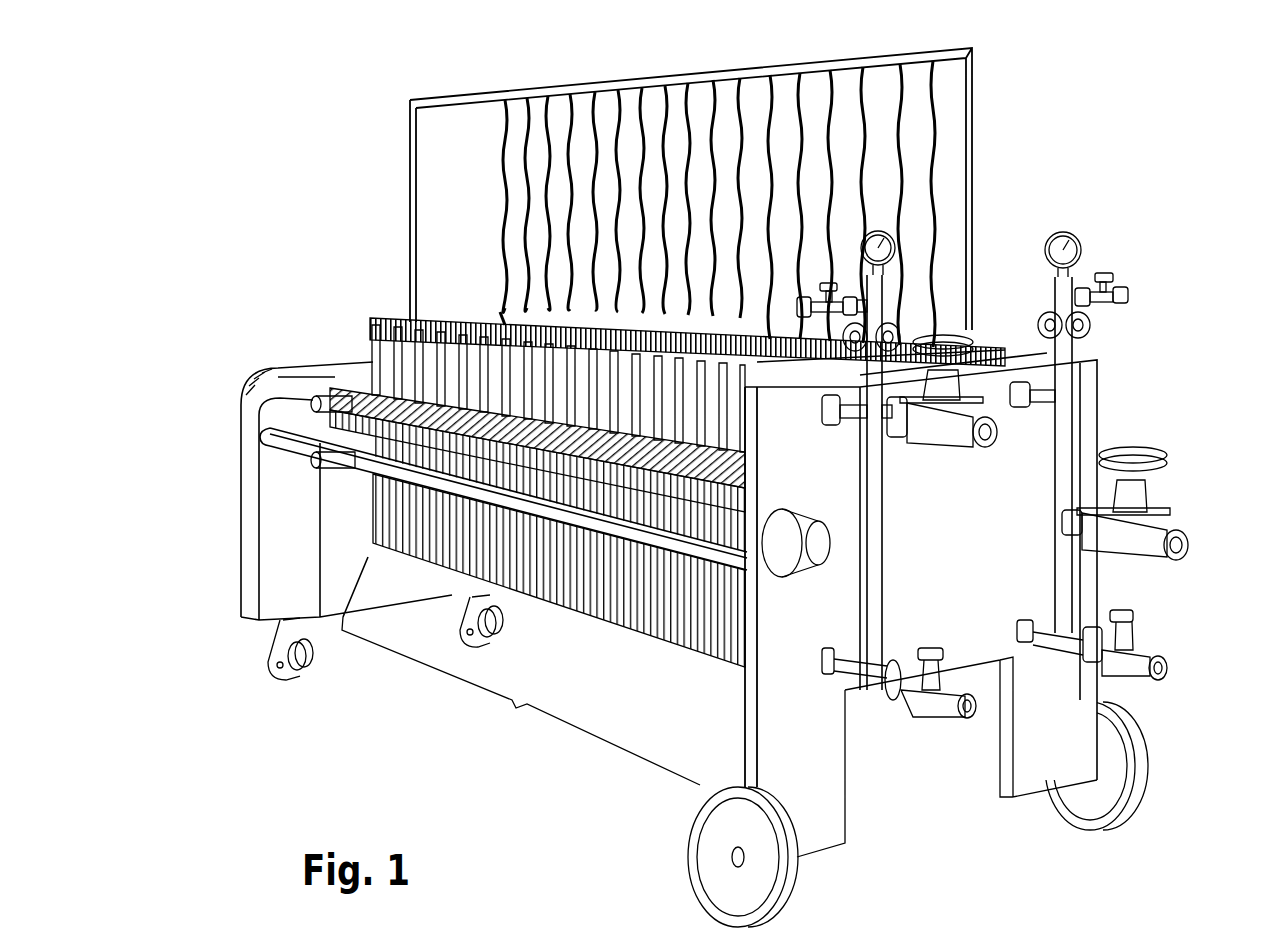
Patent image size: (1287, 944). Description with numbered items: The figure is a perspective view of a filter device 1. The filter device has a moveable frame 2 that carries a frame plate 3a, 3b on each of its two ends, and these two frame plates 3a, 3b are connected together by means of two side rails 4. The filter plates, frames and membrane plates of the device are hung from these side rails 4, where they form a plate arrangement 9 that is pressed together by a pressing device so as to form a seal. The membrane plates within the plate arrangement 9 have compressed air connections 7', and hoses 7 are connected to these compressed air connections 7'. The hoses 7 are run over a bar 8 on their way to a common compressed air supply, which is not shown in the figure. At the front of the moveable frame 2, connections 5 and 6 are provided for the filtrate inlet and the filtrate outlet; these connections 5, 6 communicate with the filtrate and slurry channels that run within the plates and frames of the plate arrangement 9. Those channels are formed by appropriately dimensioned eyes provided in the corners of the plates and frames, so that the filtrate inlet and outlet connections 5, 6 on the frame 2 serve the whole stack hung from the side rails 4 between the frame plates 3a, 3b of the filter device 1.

The filter device 1 is at (1044, 166).
The moveable frame 2 is at (241, 462).
The frame plate 3a is at (823, 775).
The frame plate 3b is at (276, 550).
The side rails 4 is at (300, 402).
The connection for the filtrate inlet 5 is at (960, 712).
The connection for the filtrate outlet 6 is at (1167, 673).
The hoses 7 is at (689, 204).
The compressed air connections 7' is at (475, 288).
The bar 8 is at (497, 98).
The plate arrangement 9 is at (521, 701).